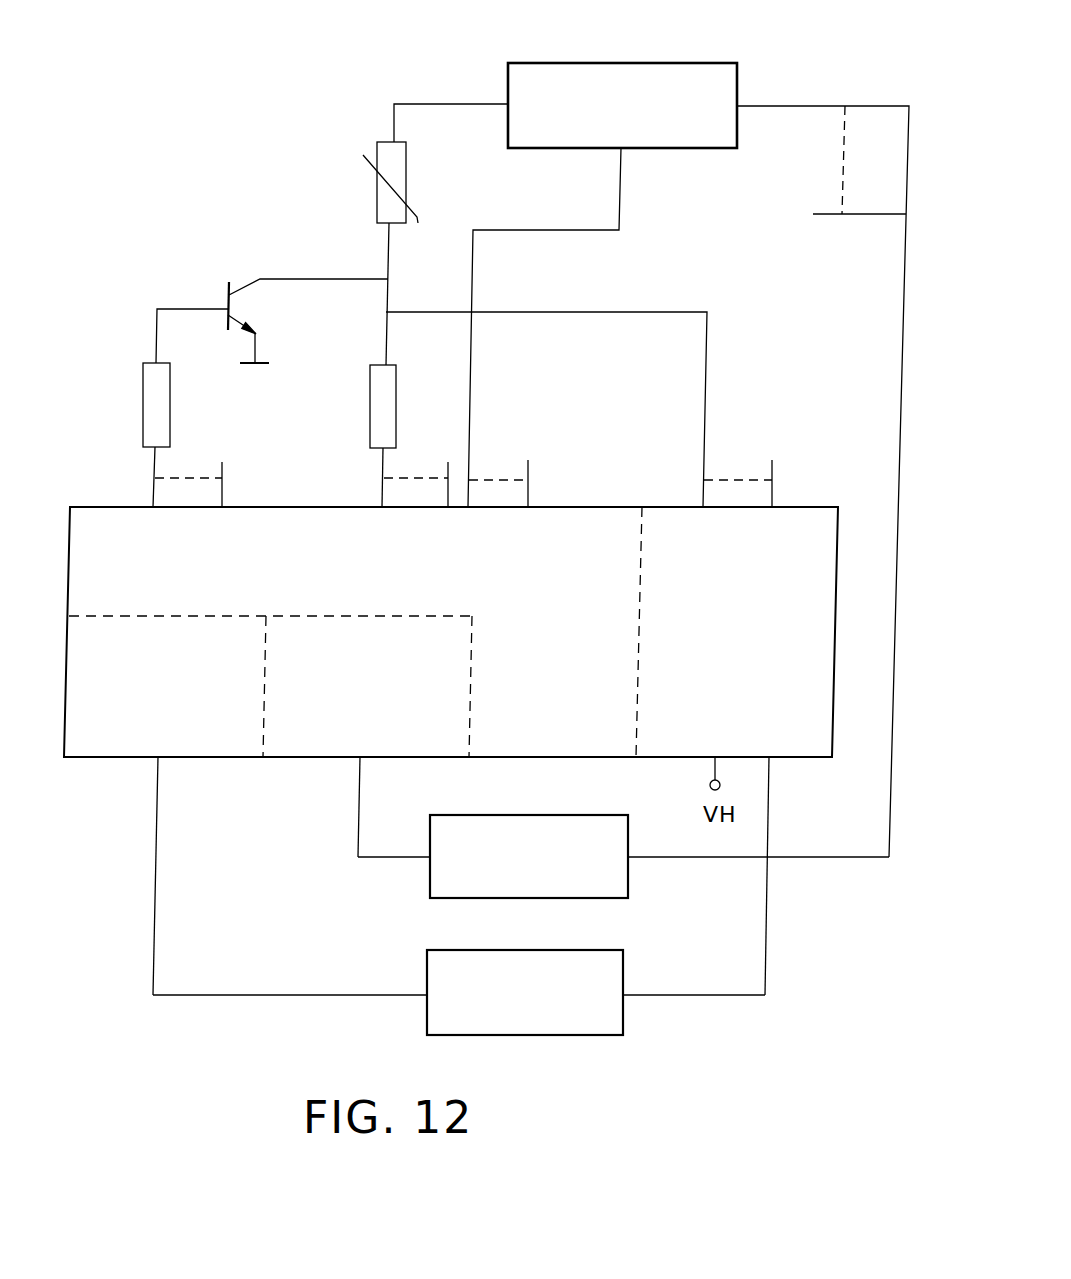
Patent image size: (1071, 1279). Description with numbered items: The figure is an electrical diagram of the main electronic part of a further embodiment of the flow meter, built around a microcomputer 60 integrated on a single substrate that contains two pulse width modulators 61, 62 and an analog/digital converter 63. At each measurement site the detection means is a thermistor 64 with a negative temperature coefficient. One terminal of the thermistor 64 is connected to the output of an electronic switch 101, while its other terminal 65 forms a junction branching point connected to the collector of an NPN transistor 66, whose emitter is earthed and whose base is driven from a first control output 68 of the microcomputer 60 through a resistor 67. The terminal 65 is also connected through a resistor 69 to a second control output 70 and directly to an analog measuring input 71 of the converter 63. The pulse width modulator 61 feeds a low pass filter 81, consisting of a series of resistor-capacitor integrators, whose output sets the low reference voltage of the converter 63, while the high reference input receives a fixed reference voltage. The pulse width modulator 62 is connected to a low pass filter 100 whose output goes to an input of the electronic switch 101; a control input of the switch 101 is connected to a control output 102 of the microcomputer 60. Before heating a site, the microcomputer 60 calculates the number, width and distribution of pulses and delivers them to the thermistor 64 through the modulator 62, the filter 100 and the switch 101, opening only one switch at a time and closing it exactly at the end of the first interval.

The electronic switch 101 is at (658, 62).
The thermistor 64 is at (378, 147).
The terminal 65 is at (388, 259).
The NPN transistor 66 is at (228, 287).
The resistor 67 is at (143, 394).
The first control output 68 is at (149, 506).
The resistor 69 is at (388, 392).
The second control output 70 is at (380, 505).
The control output 102 is at (470, 503).
The microcomputer 60 is at (542, 505).
The analog measuring input 71 is at (703, 507).
The analog/digital converter 63 is at (805, 517).
The pulse width modulator 61 is at (100, 737).
The pulse width modulator 62 is at (298, 747).
The low pass filter 100 is at (543, 815).
The low pass filter 81 is at (627, 963).